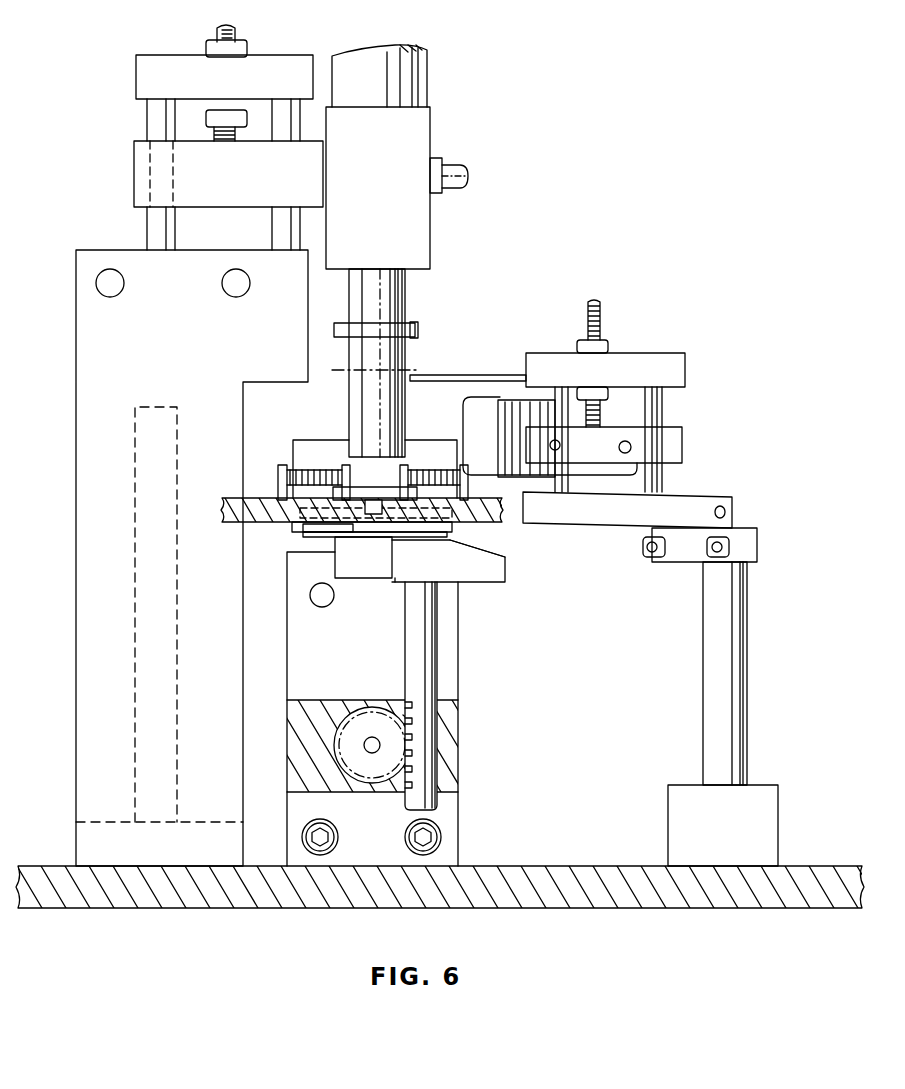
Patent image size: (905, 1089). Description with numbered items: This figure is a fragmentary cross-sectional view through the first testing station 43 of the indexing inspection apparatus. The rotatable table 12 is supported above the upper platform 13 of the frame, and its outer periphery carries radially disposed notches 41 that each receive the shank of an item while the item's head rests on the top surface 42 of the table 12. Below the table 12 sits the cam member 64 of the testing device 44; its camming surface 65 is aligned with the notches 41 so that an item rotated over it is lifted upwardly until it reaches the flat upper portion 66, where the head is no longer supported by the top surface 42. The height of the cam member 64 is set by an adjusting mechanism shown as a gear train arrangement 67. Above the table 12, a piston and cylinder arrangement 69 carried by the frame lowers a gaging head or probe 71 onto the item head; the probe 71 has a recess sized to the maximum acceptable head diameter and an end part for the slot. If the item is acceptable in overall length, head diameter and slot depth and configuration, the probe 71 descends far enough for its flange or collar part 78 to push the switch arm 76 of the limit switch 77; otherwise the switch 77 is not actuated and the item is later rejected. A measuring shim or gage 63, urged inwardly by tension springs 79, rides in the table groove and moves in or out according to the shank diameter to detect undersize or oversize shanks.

The rotatable table 12 is at (230, 496).
The upper platform 13 is at (820, 866).
The notches 41 is at (358, 520).
The top surface of the table 42 is at (265, 498).
The first testing station 43 is at (303, 427).
The testing device 44 is at (448, 143).
The measuring shim or gage 63 is at (375, 517).
The cam member 64 is at (477, 568).
The camming surface 65 is at (455, 541).
The flat upper portion of the cam member 66 is at (395, 580).
The gear train arrangement 67 is at (395, 748).
The piston and cylinder arrangement 69 is at (413, 80).
The gaging head or probe 71 is at (357, 405).
The switch arm 76 is at (447, 375).
The limit switch 77 is at (520, 395).
The flange or collar part 78 is at (412, 368).
The tension springs 79 is at (310, 467).